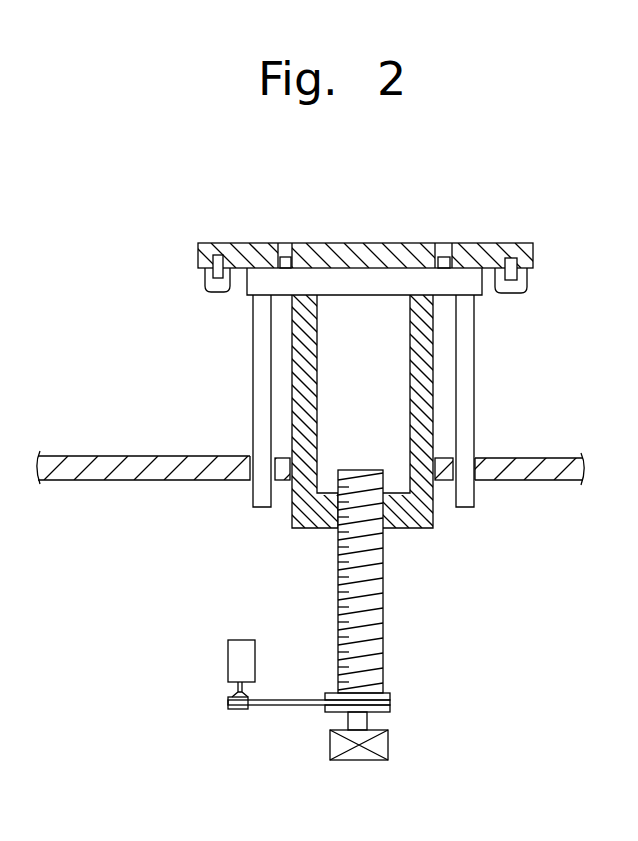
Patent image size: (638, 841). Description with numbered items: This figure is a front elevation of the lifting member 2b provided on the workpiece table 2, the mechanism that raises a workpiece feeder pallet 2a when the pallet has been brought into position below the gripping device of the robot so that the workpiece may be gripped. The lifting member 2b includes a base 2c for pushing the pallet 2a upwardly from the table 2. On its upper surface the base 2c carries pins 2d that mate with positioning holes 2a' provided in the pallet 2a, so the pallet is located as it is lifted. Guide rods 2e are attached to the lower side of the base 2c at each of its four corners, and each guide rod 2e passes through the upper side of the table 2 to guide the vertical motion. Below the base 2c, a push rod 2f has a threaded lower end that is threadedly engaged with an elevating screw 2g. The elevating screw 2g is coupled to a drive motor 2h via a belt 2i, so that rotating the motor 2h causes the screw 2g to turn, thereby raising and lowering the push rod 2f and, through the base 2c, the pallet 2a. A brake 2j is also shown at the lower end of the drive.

The table 2 is at (535, 457).
The workpiece feeder pallet 2a is at (356, 237).
The positioning hole 2a' is at (354, 220).
The lifting member 2b is at (108, 320).
The base 2c is at (363, 275).
The pin 2d is at (291, 257).
The guide rod 2e is at (253, 341).
The push rod 2f is at (300, 400).
The elevating screw 2g is at (380, 602).
The drive motor 2h is at (228, 660).
The belt 2i is at (290, 708).
The brake 2j is at (385, 748).